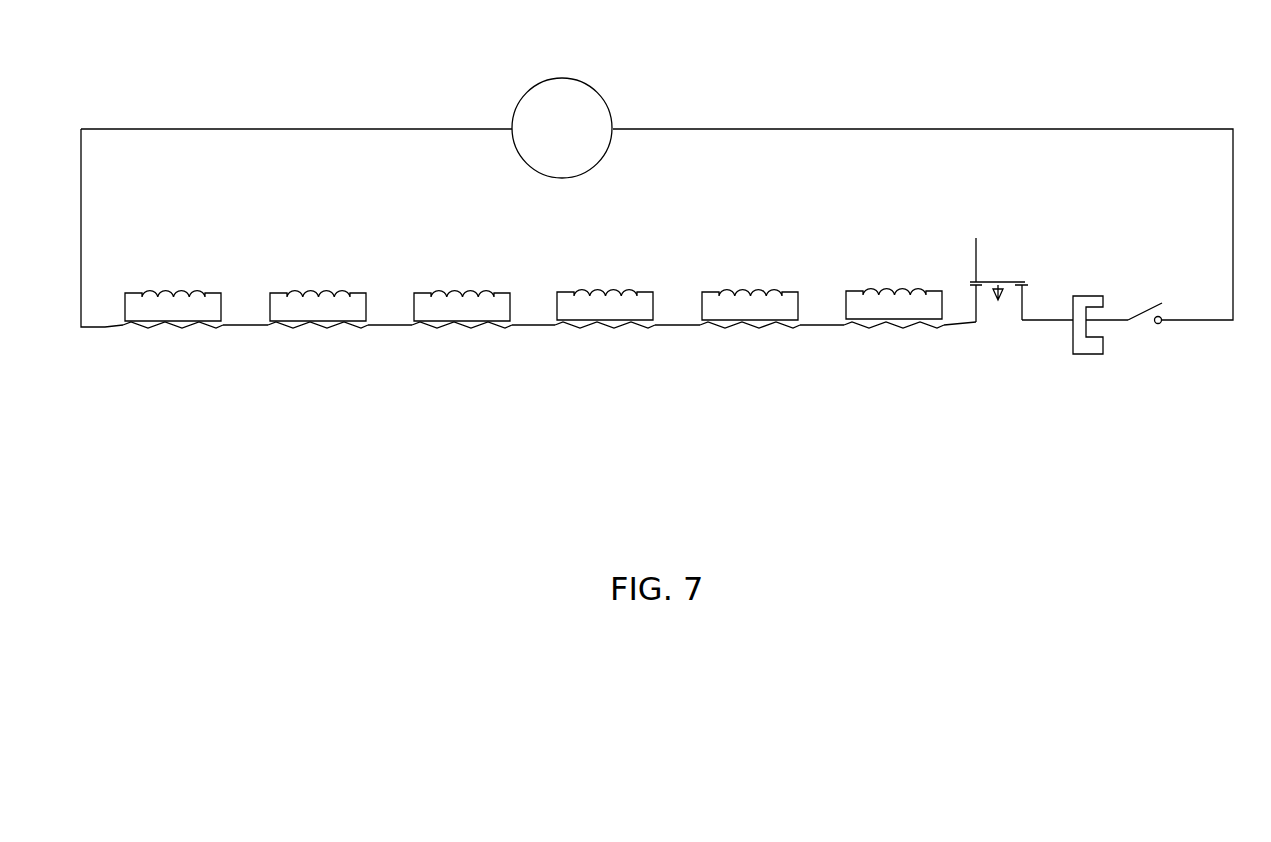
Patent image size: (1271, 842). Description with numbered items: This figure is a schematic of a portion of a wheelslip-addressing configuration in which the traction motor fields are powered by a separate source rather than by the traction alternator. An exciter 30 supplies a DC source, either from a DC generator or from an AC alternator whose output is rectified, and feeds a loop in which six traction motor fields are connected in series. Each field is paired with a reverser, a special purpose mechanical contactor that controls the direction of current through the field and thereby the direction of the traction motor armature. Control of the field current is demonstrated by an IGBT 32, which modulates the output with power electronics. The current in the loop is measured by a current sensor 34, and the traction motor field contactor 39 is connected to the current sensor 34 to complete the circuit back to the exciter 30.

The exciter 30 is at (583, 88).
The IGBT 32 is at (1000, 285).
The current sensor 34 is at (1095, 335).
The traction motor field contactor 39 is at (1140, 300).